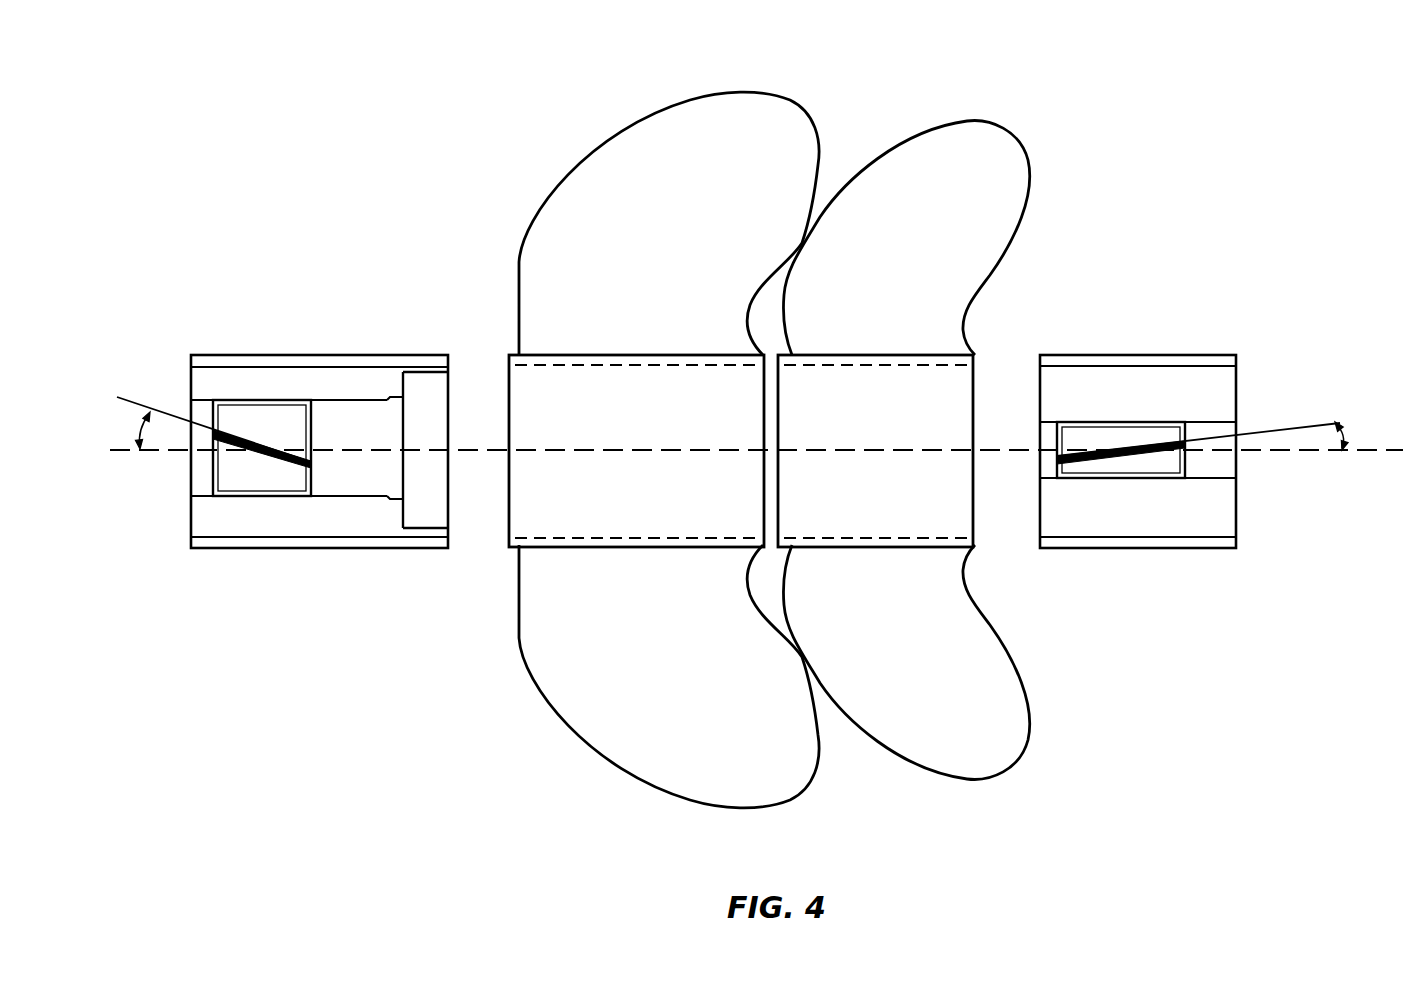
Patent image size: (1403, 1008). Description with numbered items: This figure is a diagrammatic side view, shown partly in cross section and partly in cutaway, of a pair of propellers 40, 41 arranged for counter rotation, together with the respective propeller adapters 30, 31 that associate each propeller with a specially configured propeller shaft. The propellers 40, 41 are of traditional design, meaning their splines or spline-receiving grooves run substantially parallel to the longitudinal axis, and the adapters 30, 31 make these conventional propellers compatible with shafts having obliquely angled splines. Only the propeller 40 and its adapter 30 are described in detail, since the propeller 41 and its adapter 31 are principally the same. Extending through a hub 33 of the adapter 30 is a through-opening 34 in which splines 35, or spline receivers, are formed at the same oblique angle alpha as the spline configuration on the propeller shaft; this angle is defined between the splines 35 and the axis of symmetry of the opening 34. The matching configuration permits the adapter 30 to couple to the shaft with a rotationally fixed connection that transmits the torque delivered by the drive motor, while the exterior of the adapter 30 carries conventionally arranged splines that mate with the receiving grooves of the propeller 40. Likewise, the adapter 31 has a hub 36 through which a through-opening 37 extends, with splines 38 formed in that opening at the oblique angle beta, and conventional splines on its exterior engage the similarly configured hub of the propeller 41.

The propeller adapter 30 is at (279, 434).
The propeller adapter 31 is at (1206, 430).
The hub 33 is at (197, 380).
The through-opening 34 is at (197, 421).
The splines 35 is at (268, 456).
The hub 36 is at (1230, 392).
The through-opening 37 is at (1230, 432).
The splines 38 is at (1132, 457).
The propeller 40 is at (790, 60).
The propeller 41 is at (1006, 90).